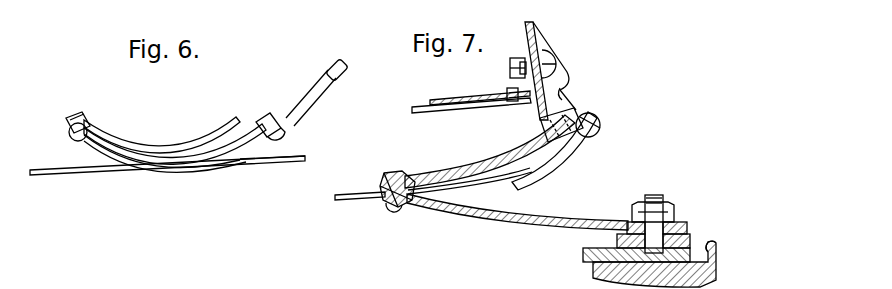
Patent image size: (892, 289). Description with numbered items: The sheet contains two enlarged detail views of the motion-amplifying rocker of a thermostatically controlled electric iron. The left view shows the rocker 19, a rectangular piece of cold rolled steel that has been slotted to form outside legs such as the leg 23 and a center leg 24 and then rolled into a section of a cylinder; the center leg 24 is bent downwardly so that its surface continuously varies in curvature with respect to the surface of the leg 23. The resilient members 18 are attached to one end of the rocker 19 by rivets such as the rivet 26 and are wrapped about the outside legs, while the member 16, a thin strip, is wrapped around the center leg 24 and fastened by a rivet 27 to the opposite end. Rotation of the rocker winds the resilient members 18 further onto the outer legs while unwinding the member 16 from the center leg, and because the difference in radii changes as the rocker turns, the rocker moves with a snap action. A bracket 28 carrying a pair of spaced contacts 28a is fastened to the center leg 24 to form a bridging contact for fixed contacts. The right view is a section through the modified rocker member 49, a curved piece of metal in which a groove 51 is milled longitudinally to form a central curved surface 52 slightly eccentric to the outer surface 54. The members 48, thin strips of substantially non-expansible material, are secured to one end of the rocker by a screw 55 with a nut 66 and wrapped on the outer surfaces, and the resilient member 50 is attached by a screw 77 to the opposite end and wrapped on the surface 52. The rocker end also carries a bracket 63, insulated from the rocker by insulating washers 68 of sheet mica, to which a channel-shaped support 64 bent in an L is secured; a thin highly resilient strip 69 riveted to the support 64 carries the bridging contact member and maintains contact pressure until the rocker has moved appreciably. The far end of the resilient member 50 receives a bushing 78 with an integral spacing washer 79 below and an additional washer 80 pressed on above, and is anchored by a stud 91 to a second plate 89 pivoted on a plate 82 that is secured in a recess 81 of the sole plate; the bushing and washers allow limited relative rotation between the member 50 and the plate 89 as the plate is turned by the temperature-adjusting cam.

In FIG. 6, the member 16 is at (86, 178).
In FIG. 6, the resilient members 18 is at (296, 162).
In FIG. 6, the rocker 19 is at (74, 118).
In FIG. 6, the outside leg 23 is at (198, 143).
In FIG. 6, the center leg 24 is at (250, 134).
In FIG. 6, the rivet 26 is at (64, 131).
In FIG. 6, the rivet 27 is at (273, 118).
In FIG. 6, the bracket 28 is at (338, 80).
In FIG. 6, the spaced contacts 28a is at (332, 68).
In FIG. 7, the members 48 is at (366, 200).
In FIG. 7, the rocker member 49 is at (390, 178).
In FIG. 7, the resilient member 50 is at (546, 220).
In FIG. 7, the groove 51 is at (503, 192).
In FIG. 7, the curved surface 52 is at (525, 178).
In FIG. 7, the outer surface 54 is at (546, 161).
In FIG. 7, the screw 55 is at (601, 128).
In FIG. 7, the bracket 63 is at (562, 75).
In FIG. 7, the channel-shaped support 64 is at (462, 100).
In FIG. 7, the nut 66 is at (562, 82).
In FIG. 7, the insulating washers 68 is at (547, 134).
In FIG. 7, the resilient strip 69 is at (413, 106).
In FIG. 7, the screw 77 is at (397, 208).
In FIG. 7, the bushing 78 is at (676, 209).
In FIG. 7, the spacing washer 79 is at (692, 238).
In FIG. 7, the washer 80 is at (690, 215).
In FIG. 7, the recess 81 is at (716, 246).
In FIG. 7, the plate 82 is at (590, 263).
In FIG. 7, the second plate 89 is at (582, 251).
In FIG. 7, the stud 91 is at (655, 196).